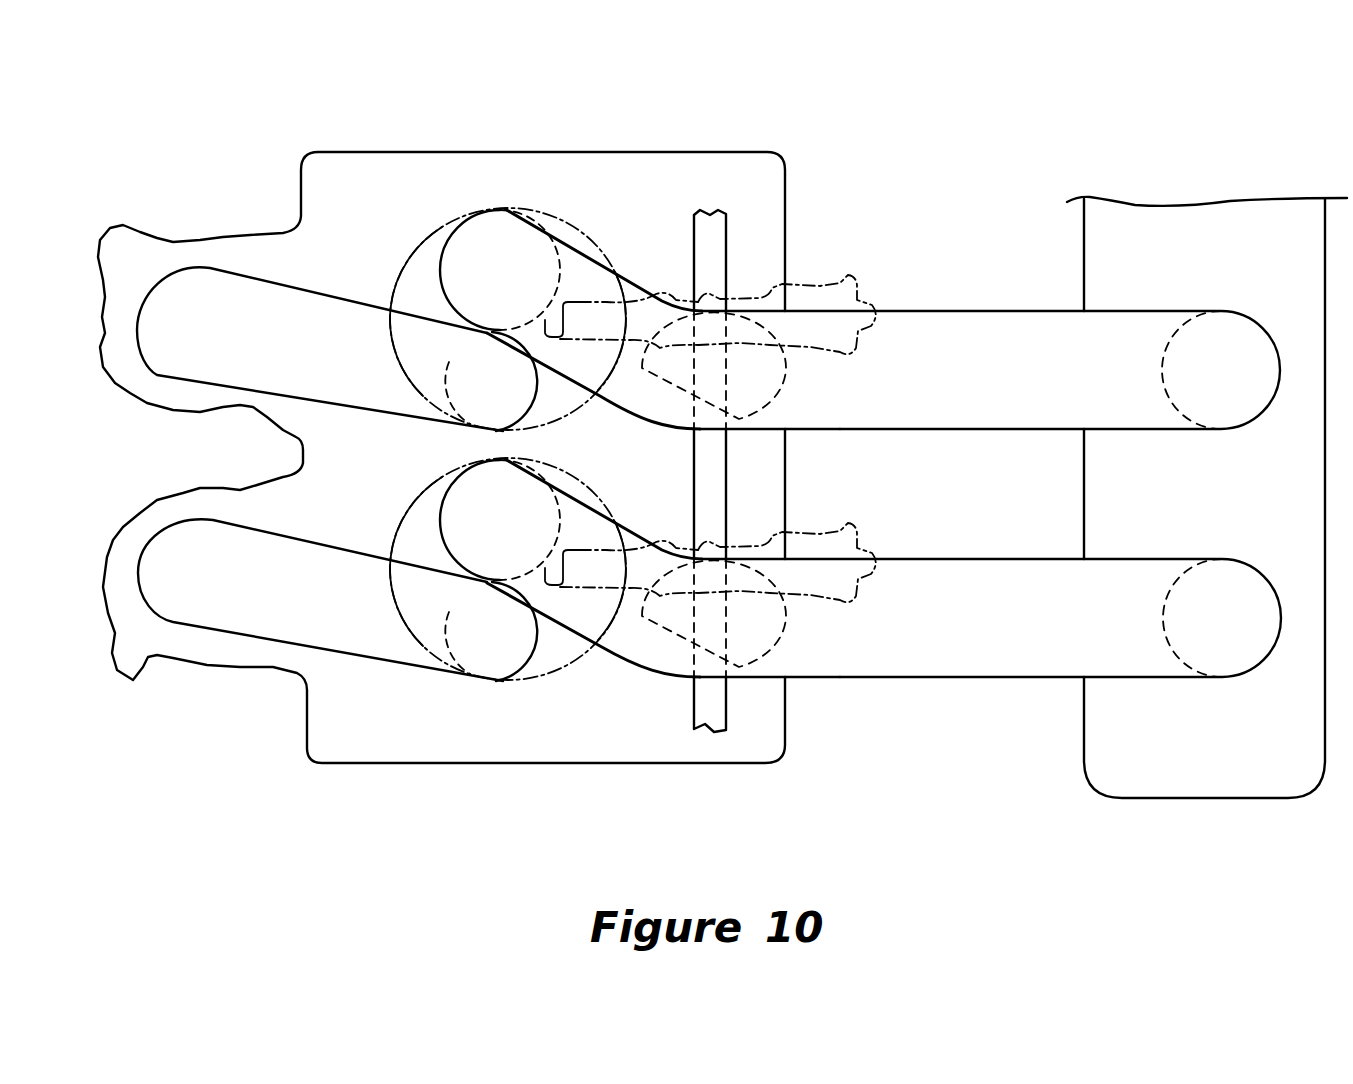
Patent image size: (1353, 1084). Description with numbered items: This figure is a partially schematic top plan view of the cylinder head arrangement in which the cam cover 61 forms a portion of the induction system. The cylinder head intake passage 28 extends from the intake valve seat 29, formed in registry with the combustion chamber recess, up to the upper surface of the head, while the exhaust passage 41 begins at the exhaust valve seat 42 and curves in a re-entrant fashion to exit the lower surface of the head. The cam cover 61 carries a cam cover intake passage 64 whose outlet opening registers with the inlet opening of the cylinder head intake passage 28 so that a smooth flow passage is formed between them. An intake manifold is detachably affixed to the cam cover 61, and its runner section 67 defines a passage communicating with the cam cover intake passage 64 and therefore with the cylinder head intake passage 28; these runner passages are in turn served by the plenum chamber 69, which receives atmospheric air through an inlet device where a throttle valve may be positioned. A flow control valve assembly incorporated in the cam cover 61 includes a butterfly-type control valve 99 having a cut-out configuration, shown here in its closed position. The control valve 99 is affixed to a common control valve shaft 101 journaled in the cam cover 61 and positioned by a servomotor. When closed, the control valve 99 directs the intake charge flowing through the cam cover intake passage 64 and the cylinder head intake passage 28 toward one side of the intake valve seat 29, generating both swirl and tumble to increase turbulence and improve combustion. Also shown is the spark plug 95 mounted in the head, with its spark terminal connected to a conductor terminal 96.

The cam cover 61 is at (181, 161).
The control valve shaft 101 is at (718, 235).
The intake passage 28 is at (580, 272).
The spark plug 95 is at (612, 300).
The intake valve seat 29 is at (545, 304).
The exhaust passage 41 is at (307, 305).
The exhaust valve seat 42 is at (452, 352).
The conductor terminal 96 is at (850, 283).
The runner section 67 is at (960, 323).
The butterfly-type control valve 99 is at (787, 372).
The cam cover intake passage 64 is at (808, 414).
The plenum chamber 69 is at (1143, 783).